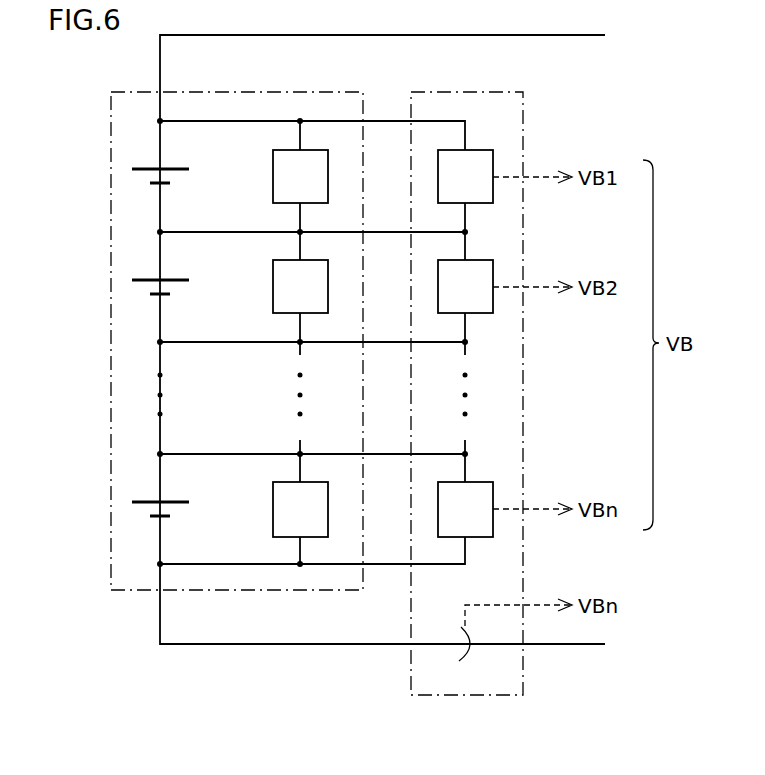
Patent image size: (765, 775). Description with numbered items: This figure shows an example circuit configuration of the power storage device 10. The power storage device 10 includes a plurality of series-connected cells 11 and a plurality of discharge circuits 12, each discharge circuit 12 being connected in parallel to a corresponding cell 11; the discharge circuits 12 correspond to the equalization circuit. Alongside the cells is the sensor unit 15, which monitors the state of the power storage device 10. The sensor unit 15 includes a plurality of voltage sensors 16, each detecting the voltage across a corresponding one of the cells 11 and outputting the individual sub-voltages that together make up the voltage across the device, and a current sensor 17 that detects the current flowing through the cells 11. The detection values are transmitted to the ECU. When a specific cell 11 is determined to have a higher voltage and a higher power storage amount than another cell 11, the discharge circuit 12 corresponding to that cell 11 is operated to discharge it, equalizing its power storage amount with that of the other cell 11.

The power storage device 10 is at (291, 92).
The cell 11 is at (140, 168).
The discharge circuit 12 is at (273, 177).
The sensor unit 15 is at (477, 92).
The voltage sensor 16 is at (475, 150).
The current sensor 17 is at (466, 655).